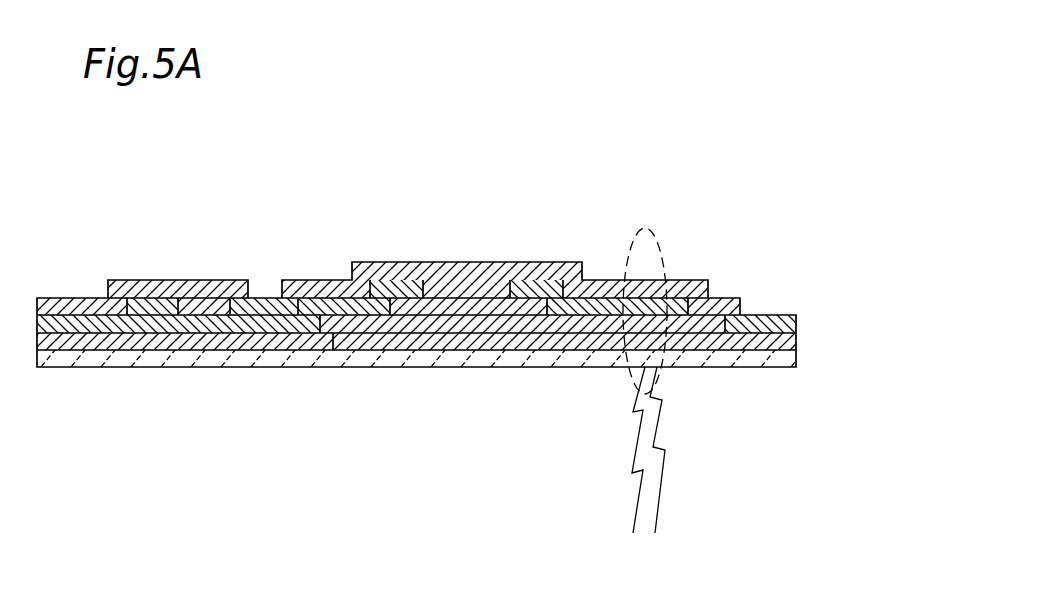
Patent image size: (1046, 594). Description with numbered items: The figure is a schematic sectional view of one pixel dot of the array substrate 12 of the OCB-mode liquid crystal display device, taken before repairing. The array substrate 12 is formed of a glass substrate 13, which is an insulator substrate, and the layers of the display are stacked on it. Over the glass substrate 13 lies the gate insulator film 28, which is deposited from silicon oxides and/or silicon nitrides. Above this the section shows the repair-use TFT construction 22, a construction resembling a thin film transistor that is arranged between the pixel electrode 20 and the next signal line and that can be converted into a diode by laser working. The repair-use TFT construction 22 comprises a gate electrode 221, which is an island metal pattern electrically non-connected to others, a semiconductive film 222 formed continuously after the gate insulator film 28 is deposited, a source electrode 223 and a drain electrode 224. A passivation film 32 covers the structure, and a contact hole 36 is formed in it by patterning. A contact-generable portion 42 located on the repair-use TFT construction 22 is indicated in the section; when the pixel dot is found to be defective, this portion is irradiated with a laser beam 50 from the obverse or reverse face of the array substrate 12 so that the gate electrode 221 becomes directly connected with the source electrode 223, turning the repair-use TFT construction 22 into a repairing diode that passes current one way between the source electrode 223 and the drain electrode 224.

The array substrate 12 is at (480, 107).
The glass substrate 13 is at (796, 355).
The pixel electrode 20 is at (172, 279).
The repair-use TFT construction 22 is at (580, 181).
The gate electrode 221 is at (553, 361).
The semiconductive film 222 is at (448, 326).
The source electrode 223 is at (527, 261).
The drain electrode 224 is at (305, 280).
The gate insulator film 28 is at (275, 346).
The passivation film 32 is at (368, 261).
The contact hole 36 is at (212, 279).
The contact-generable portion 42 is at (655, 208).
The laser beam 50 is at (663, 480).